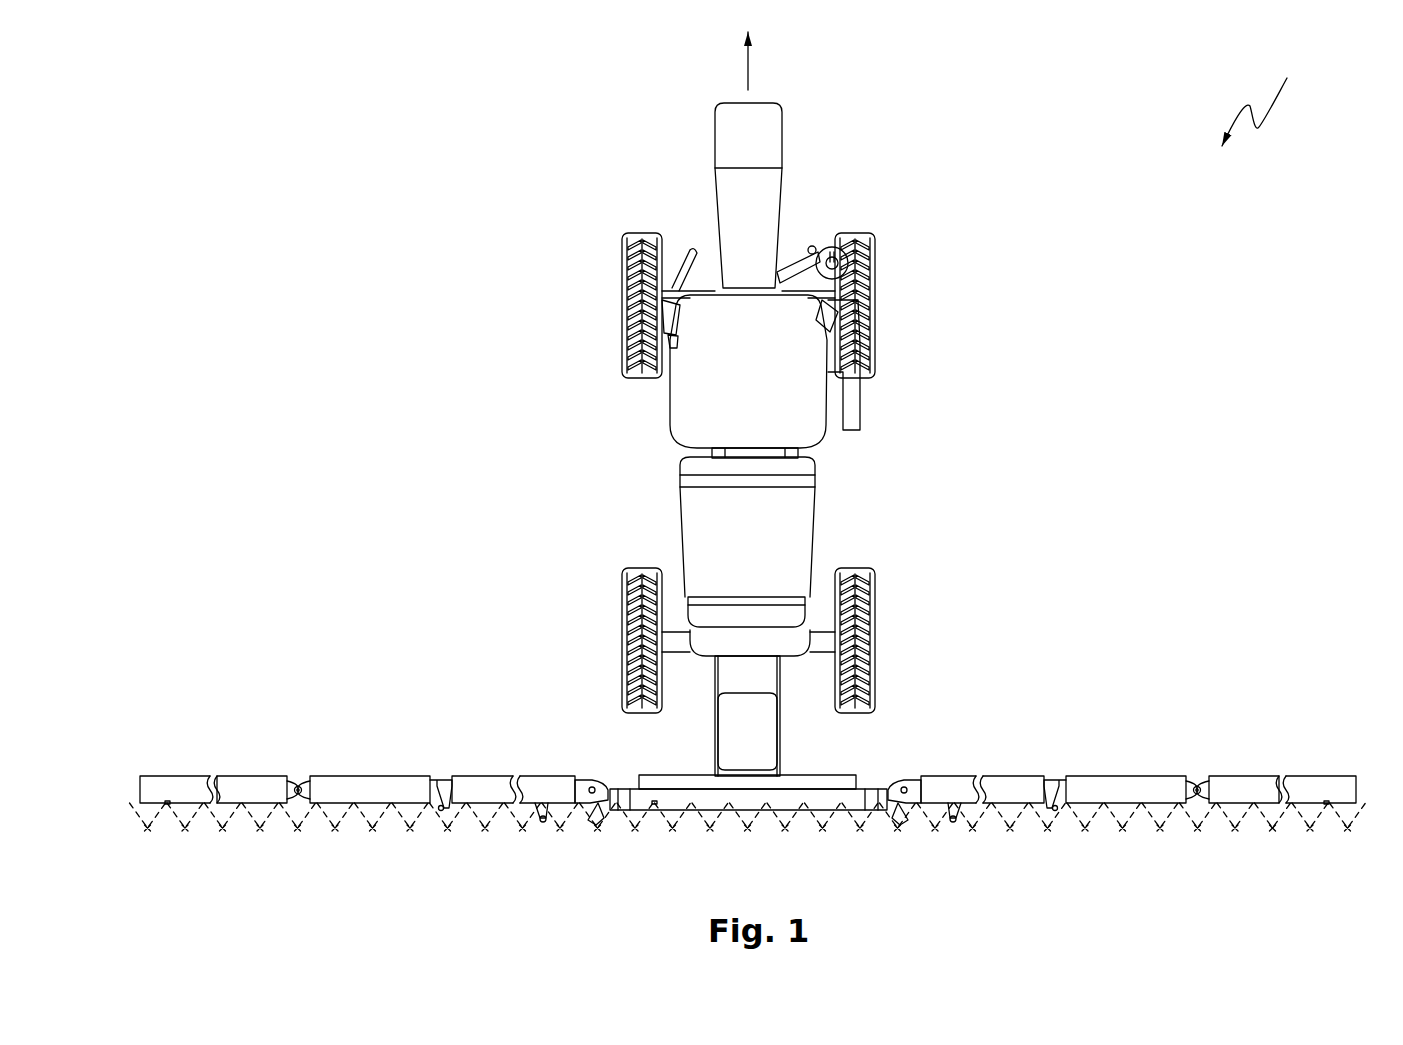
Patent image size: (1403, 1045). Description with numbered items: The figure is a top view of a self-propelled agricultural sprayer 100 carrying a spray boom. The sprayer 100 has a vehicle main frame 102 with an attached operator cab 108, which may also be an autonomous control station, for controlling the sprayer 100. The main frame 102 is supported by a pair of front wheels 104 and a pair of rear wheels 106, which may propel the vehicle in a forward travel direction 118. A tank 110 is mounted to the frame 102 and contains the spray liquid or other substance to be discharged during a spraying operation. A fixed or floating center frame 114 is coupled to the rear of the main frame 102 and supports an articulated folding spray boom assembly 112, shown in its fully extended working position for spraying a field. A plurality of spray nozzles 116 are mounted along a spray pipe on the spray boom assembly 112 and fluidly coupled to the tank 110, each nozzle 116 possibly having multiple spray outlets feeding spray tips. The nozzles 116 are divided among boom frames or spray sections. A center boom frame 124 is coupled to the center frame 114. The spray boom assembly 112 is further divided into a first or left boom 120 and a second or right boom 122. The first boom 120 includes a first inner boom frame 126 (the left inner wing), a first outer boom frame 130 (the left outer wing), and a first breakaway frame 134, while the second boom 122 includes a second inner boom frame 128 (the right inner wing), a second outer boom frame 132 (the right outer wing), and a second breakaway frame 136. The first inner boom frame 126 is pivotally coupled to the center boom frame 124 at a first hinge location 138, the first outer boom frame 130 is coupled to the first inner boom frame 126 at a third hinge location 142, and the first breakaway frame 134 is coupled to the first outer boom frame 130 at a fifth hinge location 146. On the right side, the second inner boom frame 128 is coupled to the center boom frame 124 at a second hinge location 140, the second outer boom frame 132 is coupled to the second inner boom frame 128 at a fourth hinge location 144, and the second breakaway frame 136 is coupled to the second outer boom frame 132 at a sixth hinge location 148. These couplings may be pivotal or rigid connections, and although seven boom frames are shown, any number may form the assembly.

The agricultural sprayer 100 is at (1269, 96).
The vehicle main frame 102 is at (708, 287).
The front wheels 104 is at (621, 272).
The rear wheels 106 is at (621, 630).
The operator cab 108 is at (690, 396).
The tank 110 is at (795, 526).
The spray boom assembly 112 is at (1370, 822).
The center frame 114 is at (757, 728).
The spray nozzles 116 is at (168, 810).
The forward travel direction 118 is at (748, 58).
The first boom 120 is at (143, 740).
The second boom 122 is at (1354, 740).
The center boom frame 124 is at (788, 798).
The first inner boom frame 126 is at (495, 785).
The second inner boom frame 128 is at (993, 785).
The first outer boom frame 130 is at (370, 790).
The second outer boom frame 132 is at (1125, 790).
The first breakaway frame 134 is at (233, 776).
The second breakaway frame 136 is at (1260, 785).
The first hinge location 138 is at (598, 772).
The second hinge location 140 is at (903, 772).
The left middle hinge 142 is at (442, 772).
The fourth hinge location 144 is at (1057, 772).
The left outer hinge 146 is at (298, 772).
The sixth hinge location 148 is at (1199, 772).